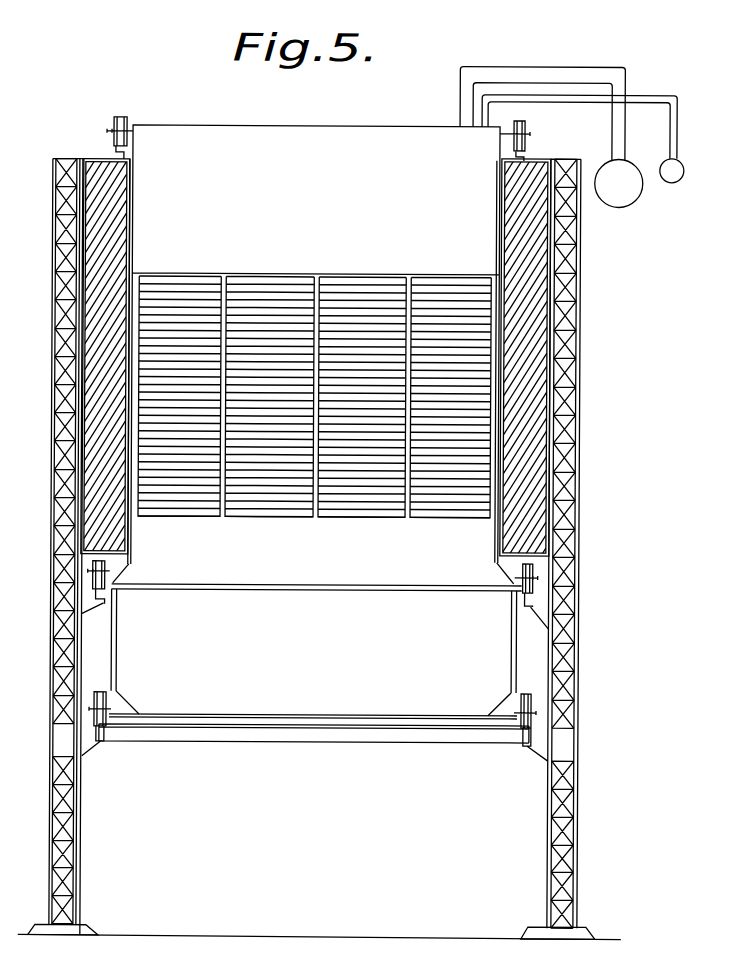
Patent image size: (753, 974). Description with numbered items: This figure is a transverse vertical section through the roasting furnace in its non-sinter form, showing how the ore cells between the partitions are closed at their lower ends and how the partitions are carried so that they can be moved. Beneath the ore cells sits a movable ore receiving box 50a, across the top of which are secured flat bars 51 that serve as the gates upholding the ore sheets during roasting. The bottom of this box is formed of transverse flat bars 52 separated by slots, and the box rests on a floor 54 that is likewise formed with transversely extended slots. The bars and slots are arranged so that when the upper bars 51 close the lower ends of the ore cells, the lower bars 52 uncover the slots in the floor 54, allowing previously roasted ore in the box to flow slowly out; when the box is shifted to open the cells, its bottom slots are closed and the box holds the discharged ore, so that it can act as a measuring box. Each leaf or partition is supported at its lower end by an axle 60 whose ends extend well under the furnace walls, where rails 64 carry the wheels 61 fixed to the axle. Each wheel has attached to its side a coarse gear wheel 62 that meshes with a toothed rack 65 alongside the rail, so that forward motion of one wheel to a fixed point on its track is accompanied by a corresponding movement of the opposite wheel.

The movable ore receiving box 50a is at (314, 652).
The flat bars 51 is at (311, 592).
The transverse flat bars 52 is at (253, 715).
The floor 54 is at (306, 729).
The axle 60 is at (117, 573).
The wheels 61 is at (522, 565).
The coarse gear wheel 62 is at (537, 562).
The rails 64 is at (528, 596).
The toothed rack 65 is at (537, 604).